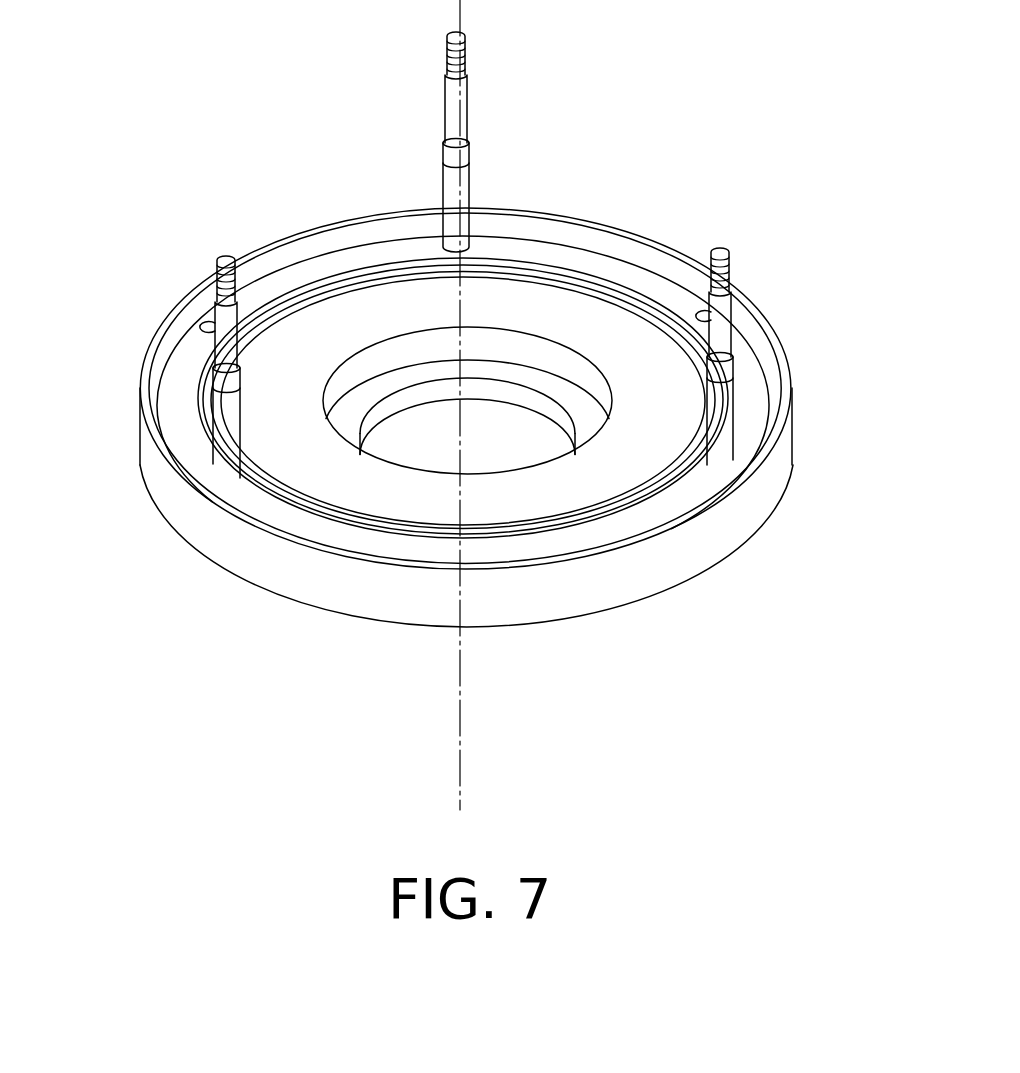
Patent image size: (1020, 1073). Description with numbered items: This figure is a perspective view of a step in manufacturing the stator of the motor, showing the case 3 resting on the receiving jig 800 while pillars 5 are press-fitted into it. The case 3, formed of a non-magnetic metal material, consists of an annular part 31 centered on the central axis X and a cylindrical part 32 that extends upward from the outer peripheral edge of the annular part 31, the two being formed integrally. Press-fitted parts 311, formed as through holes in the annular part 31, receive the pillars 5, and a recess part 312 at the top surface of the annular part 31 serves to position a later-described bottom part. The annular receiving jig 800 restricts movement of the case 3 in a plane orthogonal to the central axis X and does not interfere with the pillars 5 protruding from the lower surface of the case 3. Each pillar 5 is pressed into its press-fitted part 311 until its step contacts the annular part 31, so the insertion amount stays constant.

The case 3 is at (504, 385).
The annular part 31 is at (425, 341).
The press-fitted part 311 is at (210, 324).
The recess part 312 is at (293, 302).
The cylindrical part 32 is at (760, 447).
The pillar 5 is at (453, 100).
The receiving jig 800 is at (745, 513).
The central axis X is at (463, 676).